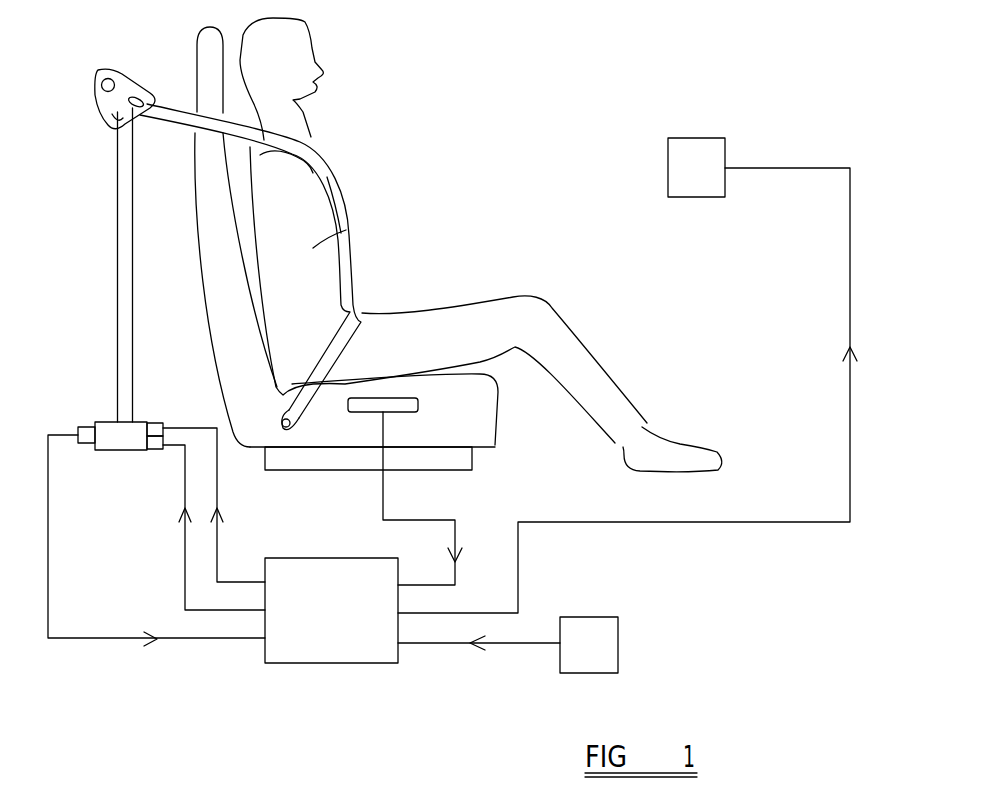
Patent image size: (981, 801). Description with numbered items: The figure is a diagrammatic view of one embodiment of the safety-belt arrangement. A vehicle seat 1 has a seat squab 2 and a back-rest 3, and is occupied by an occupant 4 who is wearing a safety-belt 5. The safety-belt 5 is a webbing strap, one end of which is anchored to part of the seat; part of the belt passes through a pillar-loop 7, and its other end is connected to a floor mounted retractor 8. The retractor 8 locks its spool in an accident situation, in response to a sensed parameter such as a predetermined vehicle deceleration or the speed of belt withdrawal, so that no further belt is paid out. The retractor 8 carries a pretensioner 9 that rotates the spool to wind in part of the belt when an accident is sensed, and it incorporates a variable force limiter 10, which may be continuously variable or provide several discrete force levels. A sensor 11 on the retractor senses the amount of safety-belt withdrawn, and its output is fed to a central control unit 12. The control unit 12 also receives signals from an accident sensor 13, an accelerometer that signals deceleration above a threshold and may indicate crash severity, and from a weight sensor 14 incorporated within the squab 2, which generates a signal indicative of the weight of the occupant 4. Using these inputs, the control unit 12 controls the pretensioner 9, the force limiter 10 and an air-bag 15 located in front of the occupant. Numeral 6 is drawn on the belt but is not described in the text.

The vehicle seat 1 is at (178, 281).
The seat squab 2 is at (483, 416).
The back-rest 3 is at (210, 212).
The occupant 4 is at (342, 233).
The safety-belt 5 is at (362, 283).
The belt buckle 6 is at (290, 431).
The pillar-loop 7 is at (133, 70).
The retractor 8 is at (96, 409).
The pretensioner 9 is at (155, 450).
The variable force limiter 10 is at (155, 423).
The sensor 11 is at (90, 448).
The central control unit 12 is at (328, 643).
The accident sensor 13 is at (603, 652).
The weight sensor 14 is at (407, 400).
The air-bag 15 is at (692, 138).